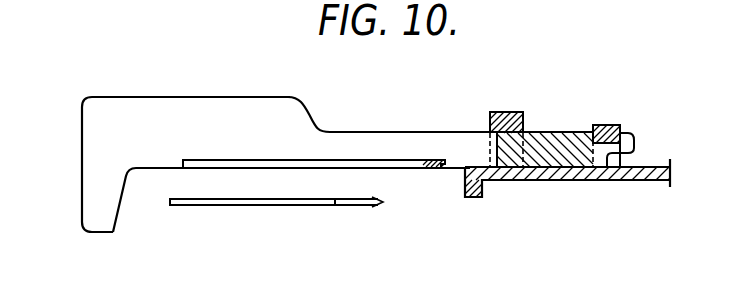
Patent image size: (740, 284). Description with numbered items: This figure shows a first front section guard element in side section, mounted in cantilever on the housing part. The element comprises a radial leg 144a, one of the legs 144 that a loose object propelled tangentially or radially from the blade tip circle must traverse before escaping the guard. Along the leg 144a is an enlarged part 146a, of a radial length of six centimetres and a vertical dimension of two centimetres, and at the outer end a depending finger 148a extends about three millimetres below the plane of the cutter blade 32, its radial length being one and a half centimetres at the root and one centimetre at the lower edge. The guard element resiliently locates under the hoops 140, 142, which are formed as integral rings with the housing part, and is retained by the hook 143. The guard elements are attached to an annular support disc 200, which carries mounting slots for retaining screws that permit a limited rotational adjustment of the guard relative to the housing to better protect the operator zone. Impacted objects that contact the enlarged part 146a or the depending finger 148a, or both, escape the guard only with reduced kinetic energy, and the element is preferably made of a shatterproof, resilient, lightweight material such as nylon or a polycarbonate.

The enlarged part 146a is at (212, 105).
The depending finger 148a is at (119, 226).
The radial leg 144a is at (330, 112).
The leg 144 is at (413, 137).
The hoop 140 is at (523, 113).
The hoop 142 is at (598, 126).
The hook 143 is at (635, 136).
The annular support disc 200 is at (580, 181).
The cutter blade 32 is at (313, 206).